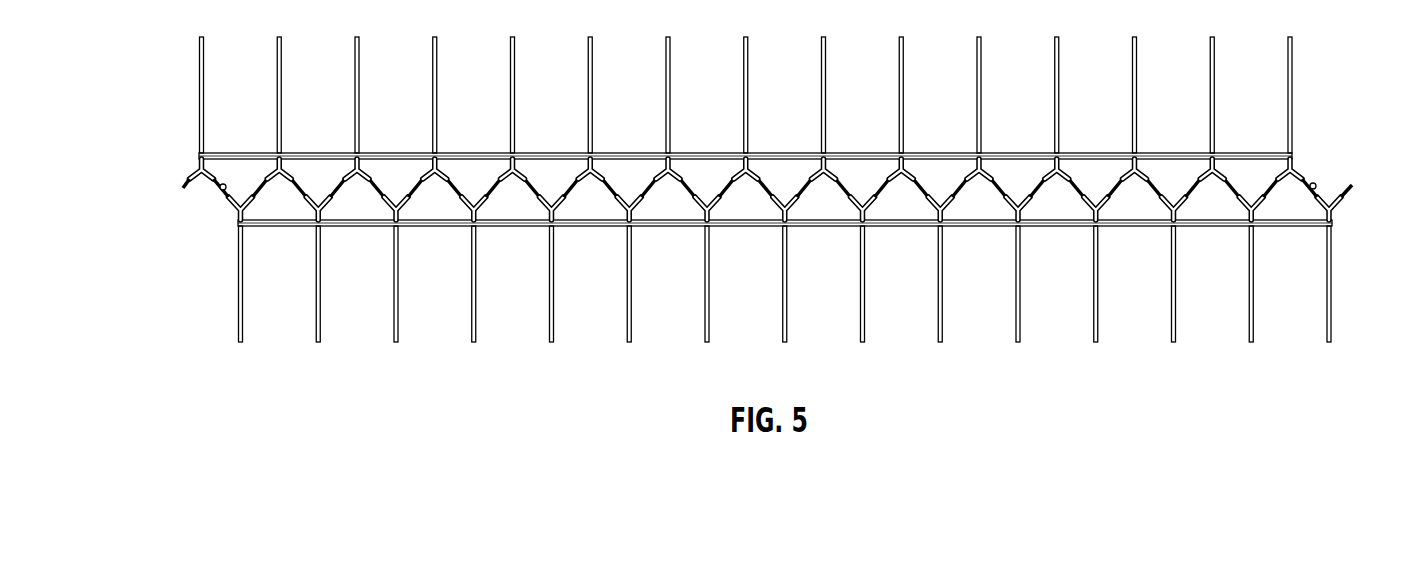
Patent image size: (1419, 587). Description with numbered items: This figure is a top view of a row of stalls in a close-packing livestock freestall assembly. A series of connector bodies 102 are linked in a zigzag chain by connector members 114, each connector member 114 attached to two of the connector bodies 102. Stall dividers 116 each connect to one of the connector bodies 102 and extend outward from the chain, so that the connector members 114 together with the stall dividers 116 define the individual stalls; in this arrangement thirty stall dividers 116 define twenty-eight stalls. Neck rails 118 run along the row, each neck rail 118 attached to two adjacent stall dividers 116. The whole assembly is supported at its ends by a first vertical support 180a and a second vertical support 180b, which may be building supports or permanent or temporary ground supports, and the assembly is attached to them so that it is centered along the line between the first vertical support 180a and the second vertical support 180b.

The connector body 102 is at (361, 164).
The connector member 114 is at (281, 214).
The stall divider 116 is at (198, 83).
The neck rail 118 is at (234, 152).
The first vertical support 180a is at (220, 189).
The second vertical support 180b is at (1316, 186).